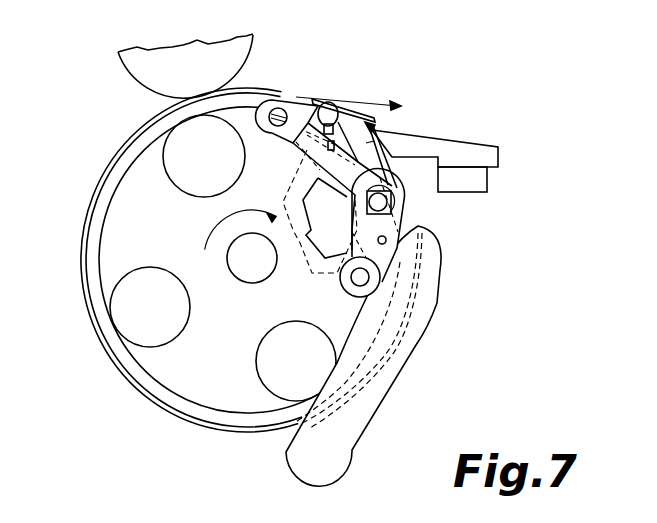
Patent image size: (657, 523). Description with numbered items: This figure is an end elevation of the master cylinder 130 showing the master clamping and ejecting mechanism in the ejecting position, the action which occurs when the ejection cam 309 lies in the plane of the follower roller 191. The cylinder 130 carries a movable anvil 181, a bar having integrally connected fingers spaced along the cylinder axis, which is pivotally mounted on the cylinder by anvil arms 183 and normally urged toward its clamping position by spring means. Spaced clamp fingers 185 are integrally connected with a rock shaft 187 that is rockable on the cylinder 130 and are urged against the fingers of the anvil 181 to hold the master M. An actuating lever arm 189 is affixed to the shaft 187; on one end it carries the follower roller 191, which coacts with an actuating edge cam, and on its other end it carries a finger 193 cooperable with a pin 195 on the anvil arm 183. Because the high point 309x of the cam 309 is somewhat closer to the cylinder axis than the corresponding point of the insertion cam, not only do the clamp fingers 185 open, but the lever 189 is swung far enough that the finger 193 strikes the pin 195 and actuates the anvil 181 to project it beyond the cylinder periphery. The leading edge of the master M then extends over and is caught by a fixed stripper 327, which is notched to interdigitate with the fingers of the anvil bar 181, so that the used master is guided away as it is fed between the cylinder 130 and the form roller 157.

The master cylinder 130 is at (110, 240).
The master M is at (110, 353).
The form roller 157 is at (132, 70).
The movable anvil 181 is at (352, 100).
The anvil arm 183 is at (295, 103).
The clamp fingers 185 is at (384, 148).
The rock shaft 187 is at (388, 206).
The actuating lever arm 189 is at (352, 202).
The follower roller 191 is at (348, 286).
The finger 193 is at (295, 151).
The pin 195 is at (325, 103).
The ejection cam 309 is at (356, 443).
The high point of the ejection cam 309x is at (370, 278).
The fixed stripper 327 is at (460, 147).